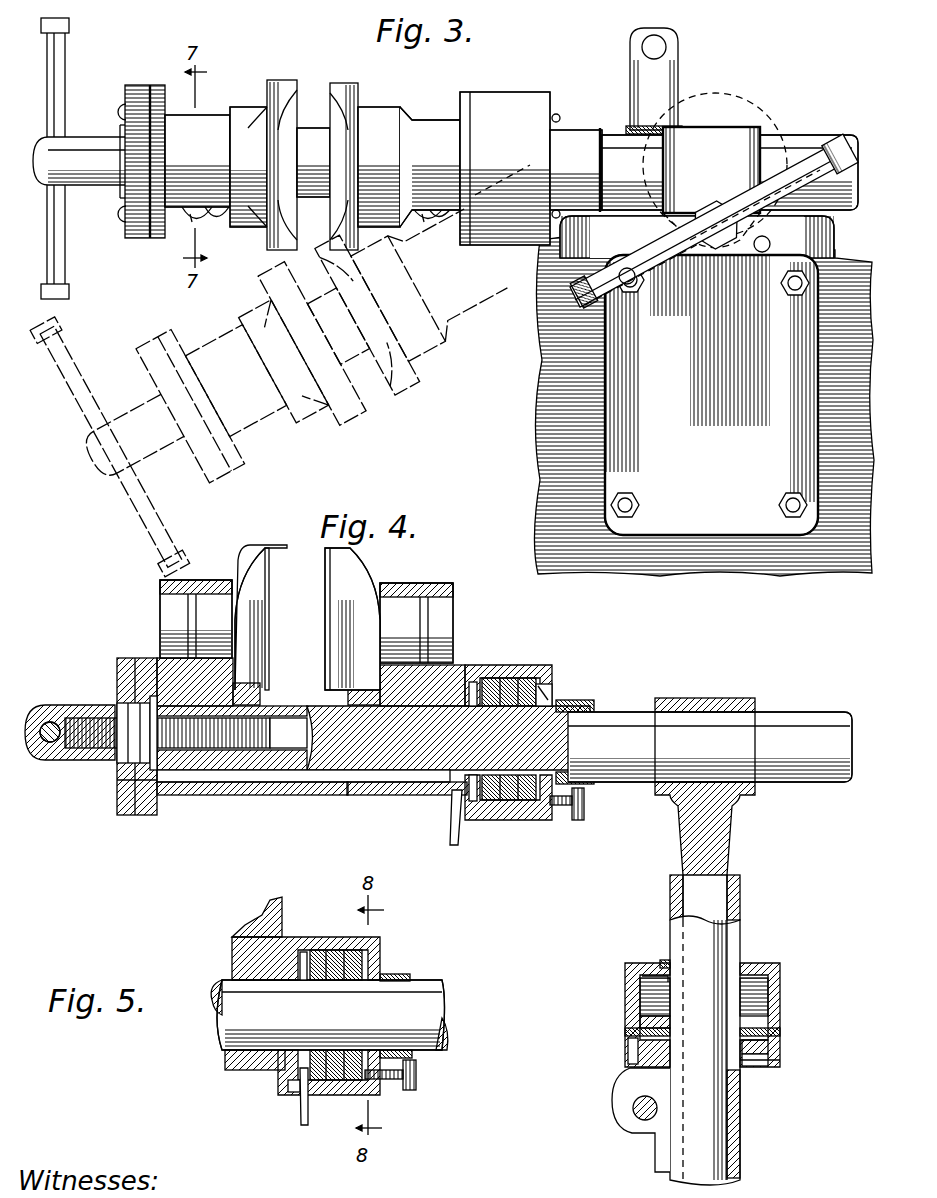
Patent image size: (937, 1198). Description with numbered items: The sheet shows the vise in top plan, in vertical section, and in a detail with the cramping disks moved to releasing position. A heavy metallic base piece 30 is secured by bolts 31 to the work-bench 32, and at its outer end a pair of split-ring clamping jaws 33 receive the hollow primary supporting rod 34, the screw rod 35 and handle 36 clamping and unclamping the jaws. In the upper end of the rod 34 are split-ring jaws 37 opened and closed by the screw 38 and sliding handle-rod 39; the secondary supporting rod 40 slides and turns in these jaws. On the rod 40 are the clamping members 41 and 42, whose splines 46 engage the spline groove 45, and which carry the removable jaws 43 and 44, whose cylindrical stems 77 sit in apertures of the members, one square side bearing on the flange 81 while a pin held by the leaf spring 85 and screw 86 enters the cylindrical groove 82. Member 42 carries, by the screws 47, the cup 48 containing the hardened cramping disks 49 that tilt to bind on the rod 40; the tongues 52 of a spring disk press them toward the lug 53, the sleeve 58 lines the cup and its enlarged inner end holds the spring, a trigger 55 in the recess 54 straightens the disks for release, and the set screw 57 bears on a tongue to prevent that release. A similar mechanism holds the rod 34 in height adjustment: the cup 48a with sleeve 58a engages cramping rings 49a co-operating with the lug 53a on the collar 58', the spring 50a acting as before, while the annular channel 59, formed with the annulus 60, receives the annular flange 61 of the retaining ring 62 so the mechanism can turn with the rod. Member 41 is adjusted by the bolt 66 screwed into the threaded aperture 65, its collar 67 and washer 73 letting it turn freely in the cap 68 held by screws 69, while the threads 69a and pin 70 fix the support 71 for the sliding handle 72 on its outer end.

In FIG. 3, the base piece 30 is at (711, 395).
In FIG. 3, the bolts 31 is at (780, 503).
In FIG. 3, the work-bench 32 is at (548, 443).
In FIG. 4, the split-ring clamping jaws 33 is at (655, 1148).
In FIG. 4, the primary supporting rod 34 is at (738, 934).
In FIG. 4, the screw rod 35 is at (632, 1110).
In FIG. 3, the handle 36 is at (642, 44).
In FIG. 3, the split-ring jaws 37 is at (706, 126).
In FIG. 4, the split-ring jaws 37 is at (712, 700).
In FIG. 3, the screw 38 is at (686, 296).
In FIG. 3, the sliding handle-rod 39 is at (854, 150).
In FIG. 3, the secondary supporting rod 40 is at (823, 110).
In FIG. 4, the secondary supporting rod 40 is at (812, 722).
In FIG. 5, the secondary supporting rod 40 is at (432, 988).
In FIG. 4, the clamping member 41 is at (248, 786).
In FIG. 4, the clamping member 42 is at (380, 797).
In FIG. 5, the clamping member 42 is at (262, 1064).
In FIG. 3, the jaw 43 is at (284, 92).
In FIG. 4, the jaw 43 is at (262, 546).
In FIG. 3, the jaw 44 is at (346, 92).
In FIG. 4, the jaw 44 is at (365, 566).
In FIG. 4, the spline groove 45 is at (310, 772).
In FIG. 3, the splines 46 is at (512, 322).
In FIG. 4, the splines 46 is at (182, 784).
In FIG. 3, the screws 47 is at (556, 112).
In FIG. 3, the cup 48 is at (496, 100).
In FIG. 4, the cup 48 is at (512, 668).
In FIG. 5, the cup 48 is at (330, 938).
In FIG. 4, the cup 48a is at (766, 964).
In FIG. 4, the cramping disks 49 is at (538, 676).
In FIG. 4, the cramping rings 49a is at (638, 986).
In FIG. 4, the spring 50a is at (650, 966).
In FIG. 4, the tongues 52 is at (548, 690).
In FIG. 4, the lug 53 is at (472, 680).
In FIG. 4, the lug 53a is at (626, 1044).
In FIG. 5, the recess 54 is at (290, 1088).
In FIG. 4, the trigger 55 is at (460, 838).
In FIG. 5, the trigger 55 is at (310, 1106).
In FIG. 4, the set screw 57 is at (586, 810).
In FIG. 5, the set screw 57 is at (418, 1078).
In FIG. 3, the sleeve 58 is at (576, 151).
In FIG. 4, the sleeve 58 is at (593, 726).
In FIG. 5, the sleeve 58 is at (402, 994).
In FIG. 4, the sleeve 58a is at (664, 958).
In FIG. 4, the collar 58' is at (732, 1029).
In FIG. 4, the annular channel 59 is at (782, 1048).
In FIG. 4, the annulus 60 is at (760, 1068).
In FIG. 4, the annular flange 61 is at (636, 1024).
In FIG. 4, the retaining ring 62 is at (782, 1064).
In FIG. 4, the threaded aperture 65 is at (288, 752).
In FIG. 4, the bolt 66 is at (168, 700).
In FIG. 4, the collar 67 is at (118, 782).
In FIG. 3, the cap 68 is at (142, 240).
In FIG. 4, the cap 68 is at (126, 816).
In FIG. 3, the screws 69 is at (120, 112).
In FIG. 4, the threads 69a is at (126, 712).
In FIG. 4, the pin 70 is at (88, 748).
In FIG. 3, the support 71 is at (95, 176).
In FIG. 4, the support 71 is at (40, 712).
In FIG. 3, the sliding handle 72 is at (66, 86).
In FIG. 4, the washer 73 is at (118, 704).
In FIG. 4, the cylindrical stems 77 is at (170, 612).
In FIG. 4, the flange 81 is at (262, 694).
In FIG. 4, the cylindrical groove 82 is at (192, 590).
In FIG. 3, the leaf spring 85 is at (210, 214).
In FIG. 3, the screw 86 is at (192, 224).